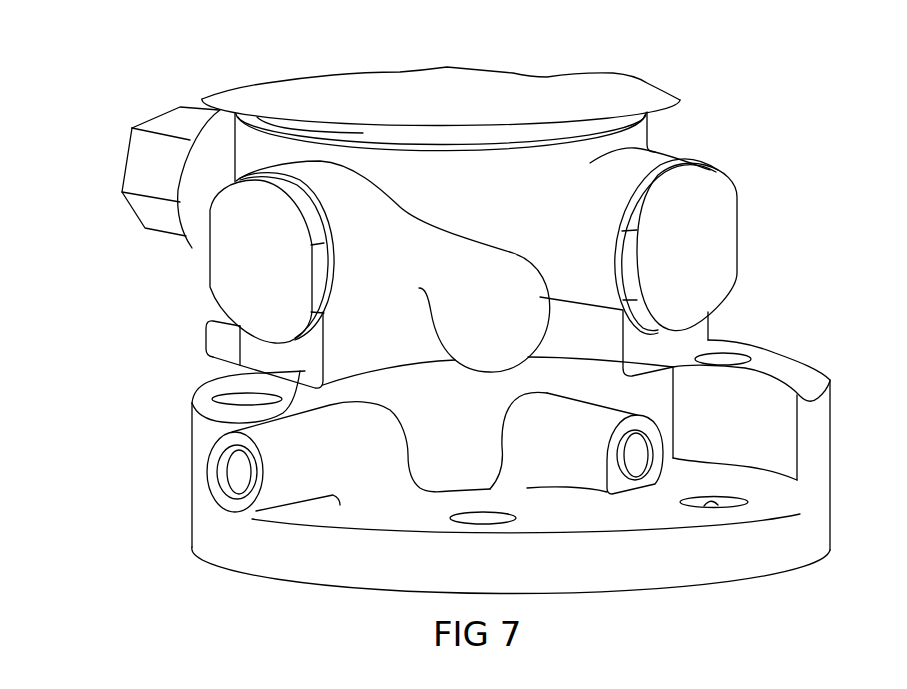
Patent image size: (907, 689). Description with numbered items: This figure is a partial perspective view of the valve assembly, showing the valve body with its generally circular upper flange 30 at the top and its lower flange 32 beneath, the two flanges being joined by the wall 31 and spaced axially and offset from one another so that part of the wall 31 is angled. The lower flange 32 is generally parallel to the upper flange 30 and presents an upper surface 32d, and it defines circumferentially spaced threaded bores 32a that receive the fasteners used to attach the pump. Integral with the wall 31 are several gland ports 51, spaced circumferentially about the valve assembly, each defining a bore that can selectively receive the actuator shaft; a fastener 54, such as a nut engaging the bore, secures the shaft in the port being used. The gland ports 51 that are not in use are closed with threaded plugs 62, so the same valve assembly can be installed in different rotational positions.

The upper flange 30 is at (620, 95).
The wall 31 is at (438, 172).
The gland port 51 is at (300, 177).
The fastener 54 is at (143, 165).
The threaded plug 62 is at (255, 260).
The lower flange 32 is at (802, 533).
The upper surface of the lower flange 32d is at (783, 484).
The threaded bore 32a is at (722, 507).